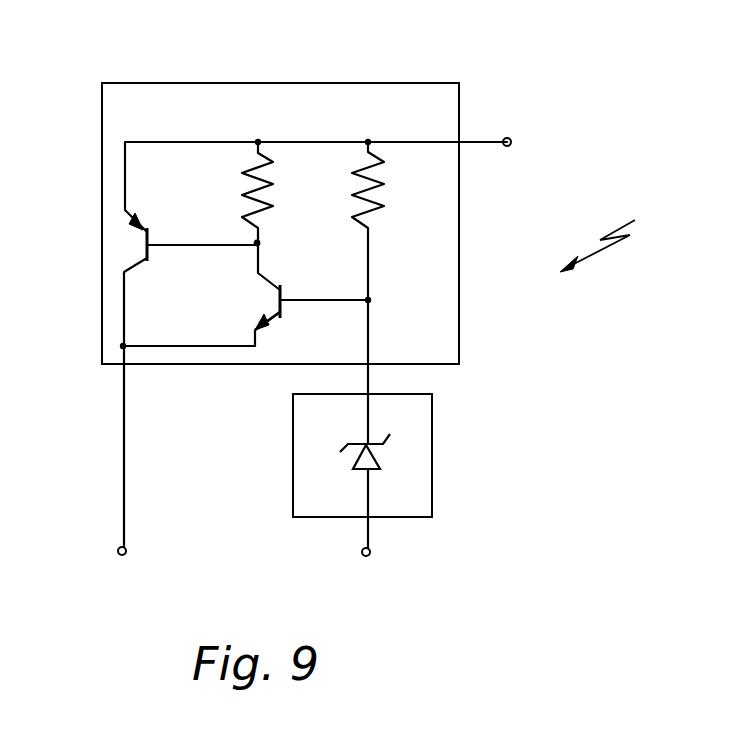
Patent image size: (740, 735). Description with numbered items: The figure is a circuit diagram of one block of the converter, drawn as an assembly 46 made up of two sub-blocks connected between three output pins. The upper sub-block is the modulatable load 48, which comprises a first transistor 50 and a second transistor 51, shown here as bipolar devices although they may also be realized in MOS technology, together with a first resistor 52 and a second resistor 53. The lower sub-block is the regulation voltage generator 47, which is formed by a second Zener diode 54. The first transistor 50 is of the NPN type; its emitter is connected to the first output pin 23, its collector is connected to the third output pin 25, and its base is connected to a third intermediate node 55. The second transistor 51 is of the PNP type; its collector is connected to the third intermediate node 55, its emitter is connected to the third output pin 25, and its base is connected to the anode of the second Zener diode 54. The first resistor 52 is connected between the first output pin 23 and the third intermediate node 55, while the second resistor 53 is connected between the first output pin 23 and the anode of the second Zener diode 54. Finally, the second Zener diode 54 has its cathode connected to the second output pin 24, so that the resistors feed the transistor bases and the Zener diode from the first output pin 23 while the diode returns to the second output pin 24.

The first output pin 23 is at (509, 147).
The second output pin 24 is at (371, 552).
The third output pin 25 is at (127, 550).
The current limiting circuit 46 is at (613, 232).
The regulation voltage generator 47 is at (434, 497).
The modulatable load 48 is at (144, 97).
The first transistor 50 is at (138, 249).
The second transistor 51 is at (272, 297).
The first resistor 52 is at (248, 191).
The second resistor 53 is at (384, 195).
The second Zener diode 54 is at (368, 458).
The third intermediate node 55 is at (260, 245).